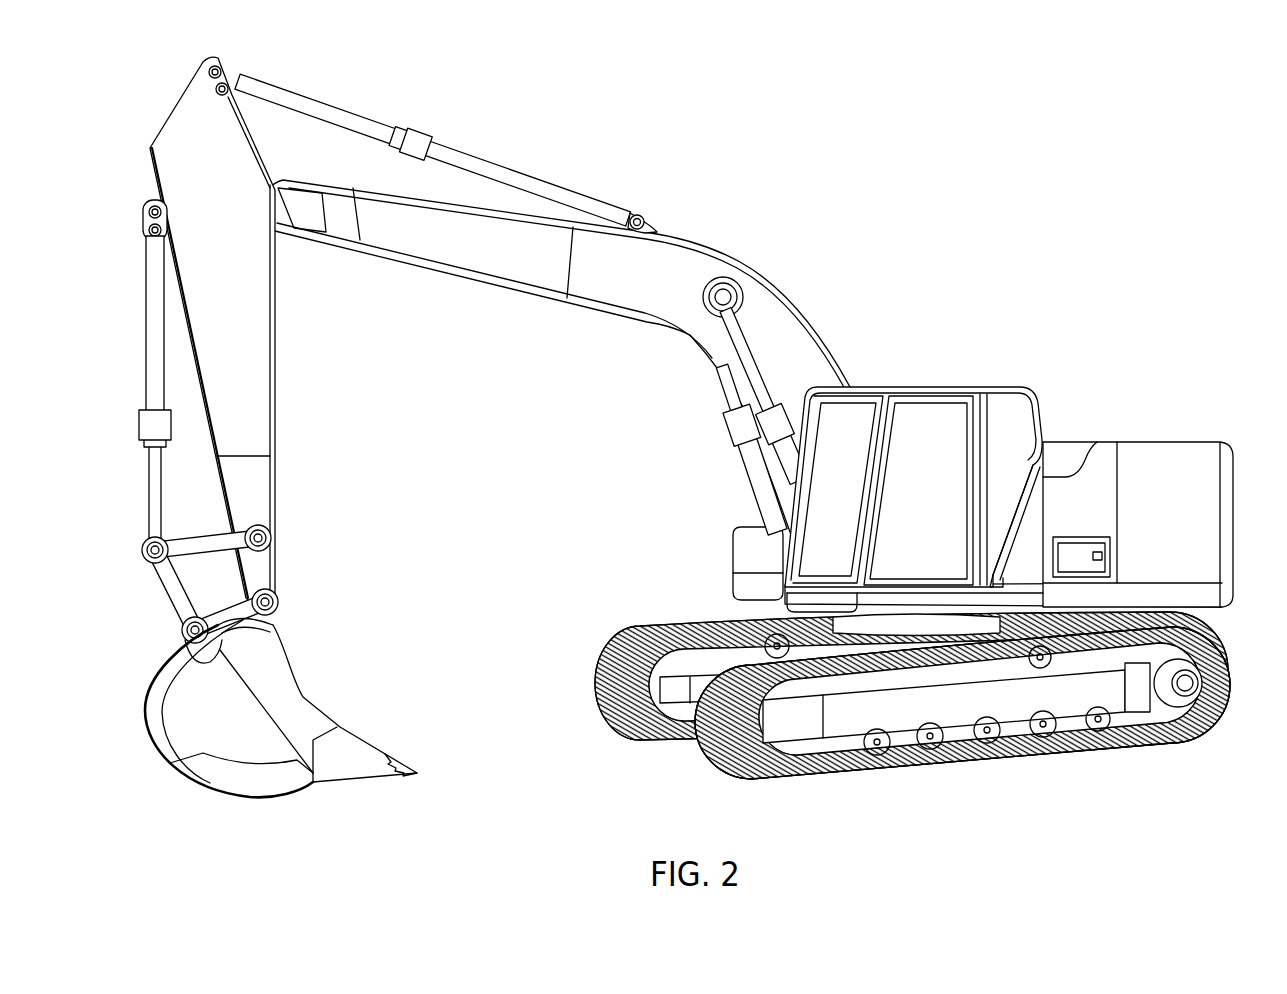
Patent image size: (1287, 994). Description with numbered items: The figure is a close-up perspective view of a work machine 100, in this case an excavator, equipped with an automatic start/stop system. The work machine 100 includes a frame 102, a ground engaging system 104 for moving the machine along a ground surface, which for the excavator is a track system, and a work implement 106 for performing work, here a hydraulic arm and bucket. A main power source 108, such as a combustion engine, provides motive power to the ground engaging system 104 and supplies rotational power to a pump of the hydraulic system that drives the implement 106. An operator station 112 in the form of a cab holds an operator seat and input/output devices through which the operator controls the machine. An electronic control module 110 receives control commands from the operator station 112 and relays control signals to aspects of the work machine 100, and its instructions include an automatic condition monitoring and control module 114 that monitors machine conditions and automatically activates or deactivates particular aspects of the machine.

The work machine 100 is at (1030, 154).
The frame 102 is at (1185, 597).
The ground engaging system 104 is at (690, 627).
The work implement 106 is at (255, 752).
The main power source 108 is at (1160, 442).
The electronic control module 110 is at (1095, 537).
The operator station 112 is at (920, 387).
The automatic condition monitoring and control module 114 is at (1104, 556).